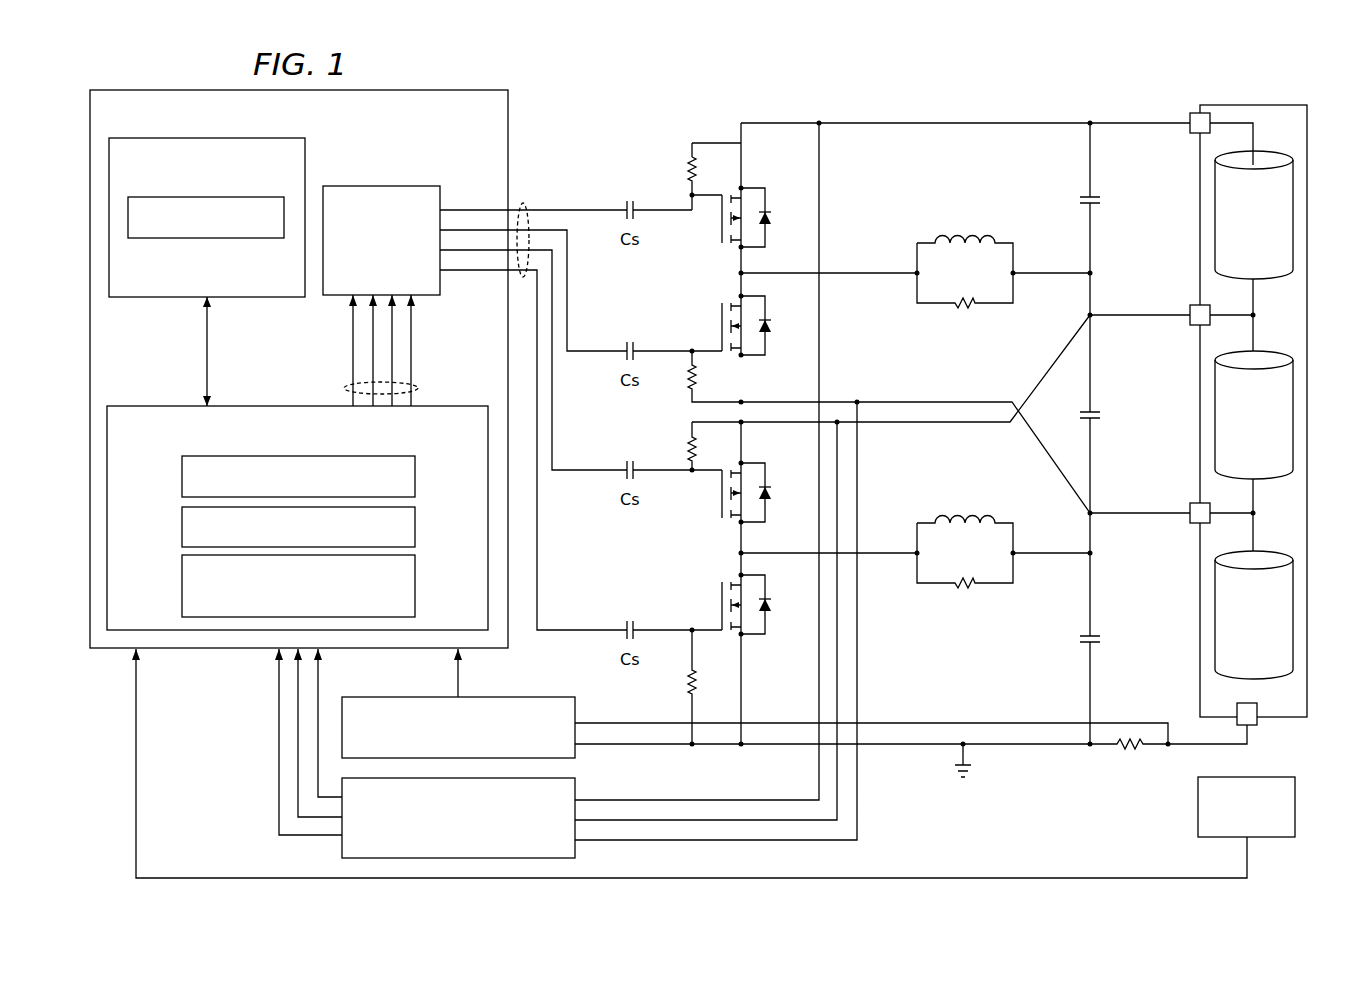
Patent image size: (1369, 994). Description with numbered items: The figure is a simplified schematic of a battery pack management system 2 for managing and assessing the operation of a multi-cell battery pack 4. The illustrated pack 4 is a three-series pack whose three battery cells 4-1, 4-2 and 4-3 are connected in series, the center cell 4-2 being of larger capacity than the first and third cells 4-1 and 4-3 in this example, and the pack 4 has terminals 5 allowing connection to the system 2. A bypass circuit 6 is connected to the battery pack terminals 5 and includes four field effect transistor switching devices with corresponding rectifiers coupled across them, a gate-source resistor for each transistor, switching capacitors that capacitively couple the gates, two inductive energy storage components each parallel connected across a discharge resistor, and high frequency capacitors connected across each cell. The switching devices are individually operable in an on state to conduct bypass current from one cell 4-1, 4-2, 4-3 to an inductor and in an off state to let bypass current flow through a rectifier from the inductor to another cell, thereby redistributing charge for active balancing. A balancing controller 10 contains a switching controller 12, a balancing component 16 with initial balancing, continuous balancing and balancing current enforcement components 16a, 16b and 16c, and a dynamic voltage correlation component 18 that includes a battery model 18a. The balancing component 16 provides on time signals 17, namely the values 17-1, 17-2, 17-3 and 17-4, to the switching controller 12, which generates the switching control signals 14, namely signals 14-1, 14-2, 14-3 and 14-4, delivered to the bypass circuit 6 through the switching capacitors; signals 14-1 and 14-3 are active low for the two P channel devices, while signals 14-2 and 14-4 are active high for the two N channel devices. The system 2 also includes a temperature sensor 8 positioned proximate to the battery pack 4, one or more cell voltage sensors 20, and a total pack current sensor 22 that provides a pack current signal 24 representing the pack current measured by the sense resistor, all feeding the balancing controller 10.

The battery pack management system 2 is at (1064, 71).
The multi-cell battery pack 4 is at (1253, 389).
The first battery cell 4-1 is at (1238, 647).
The center battery cell 4-2 is at (1238, 447).
The third battery cell 4-3 is at (1238, 248).
The battery pack terminals 5 is at (1189, 133).
The bypass circuit 6 is at (1178, 109).
The temperature sensor 8 is at (1296, 805).
The balancing controller 10 is at (519, 109).
The switching controller 12 is at (370, 272).
The switching control signals 14 is at (523, 203).
The first switching control signal 14-1 is at (586, 210).
The second switching control signal 14-2 is at (595, 351).
The third switching control signal 14-3 is at (587, 469).
The fourth switching control signal 14-4 is at (595, 629).
The balancing component 16 is at (173, 402).
The initial balancing component 16a is at (182, 476).
The continuous balancing component 16b is at (182, 527).
The balancing current enforcement component 16c is at (182, 580).
The on time signals 17 is at (378, 350).
The first on time signal 17-1 is at (353, 322).
The second on time signal 17-2 is at (373, 350).
The third on time signal 17-3 is at (392, 335).
The fourth on time signal 17-4 is at (411, 366).
The dynamic voltage correlation component 18 is at (314, 160).
The battery model 18a is at (200, 240).
The cell voltage sensors 20 is at (447, 842).
The total pack current sensor 22 is at (440, 697).
The pack current signal 24 is at (460, 680).